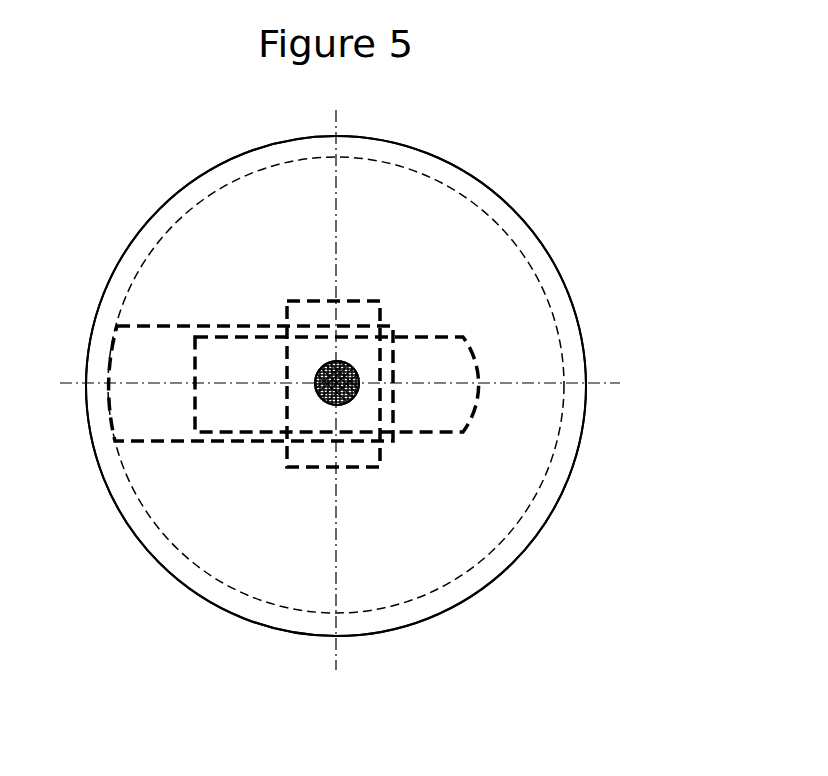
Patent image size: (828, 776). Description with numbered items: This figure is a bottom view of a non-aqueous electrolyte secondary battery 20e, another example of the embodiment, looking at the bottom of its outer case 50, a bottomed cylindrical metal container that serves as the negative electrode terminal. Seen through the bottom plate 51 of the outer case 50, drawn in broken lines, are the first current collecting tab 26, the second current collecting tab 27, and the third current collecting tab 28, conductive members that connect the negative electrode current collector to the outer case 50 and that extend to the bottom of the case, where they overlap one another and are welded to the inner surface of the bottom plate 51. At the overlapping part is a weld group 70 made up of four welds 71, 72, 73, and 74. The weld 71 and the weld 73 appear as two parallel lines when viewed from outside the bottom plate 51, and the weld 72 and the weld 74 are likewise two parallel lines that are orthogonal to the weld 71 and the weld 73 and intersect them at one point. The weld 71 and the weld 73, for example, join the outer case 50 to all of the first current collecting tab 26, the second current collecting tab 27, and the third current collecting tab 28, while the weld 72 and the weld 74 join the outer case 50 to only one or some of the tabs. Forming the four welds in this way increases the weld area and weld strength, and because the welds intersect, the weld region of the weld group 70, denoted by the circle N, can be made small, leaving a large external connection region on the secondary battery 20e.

The secondary battery 20e is at (581, 205).
The outer case 50 is at (583, 334).
The bottom plate 51 is at (485, 282).
The first current collecting tab 26 is at (190, 447).
The second current collecting tab 27 is at (434, 445).
The third current collecting tab 28 is at (366, 299).
The circle denoting weld region N is at (345, 364).
The weld group 70 is at (391, 522).
The weld 71 is at (314, 372).
The weld 72 is at (314, 390).
The weld 73 is at (333, 406).
The weld 74 is at (359, 390).